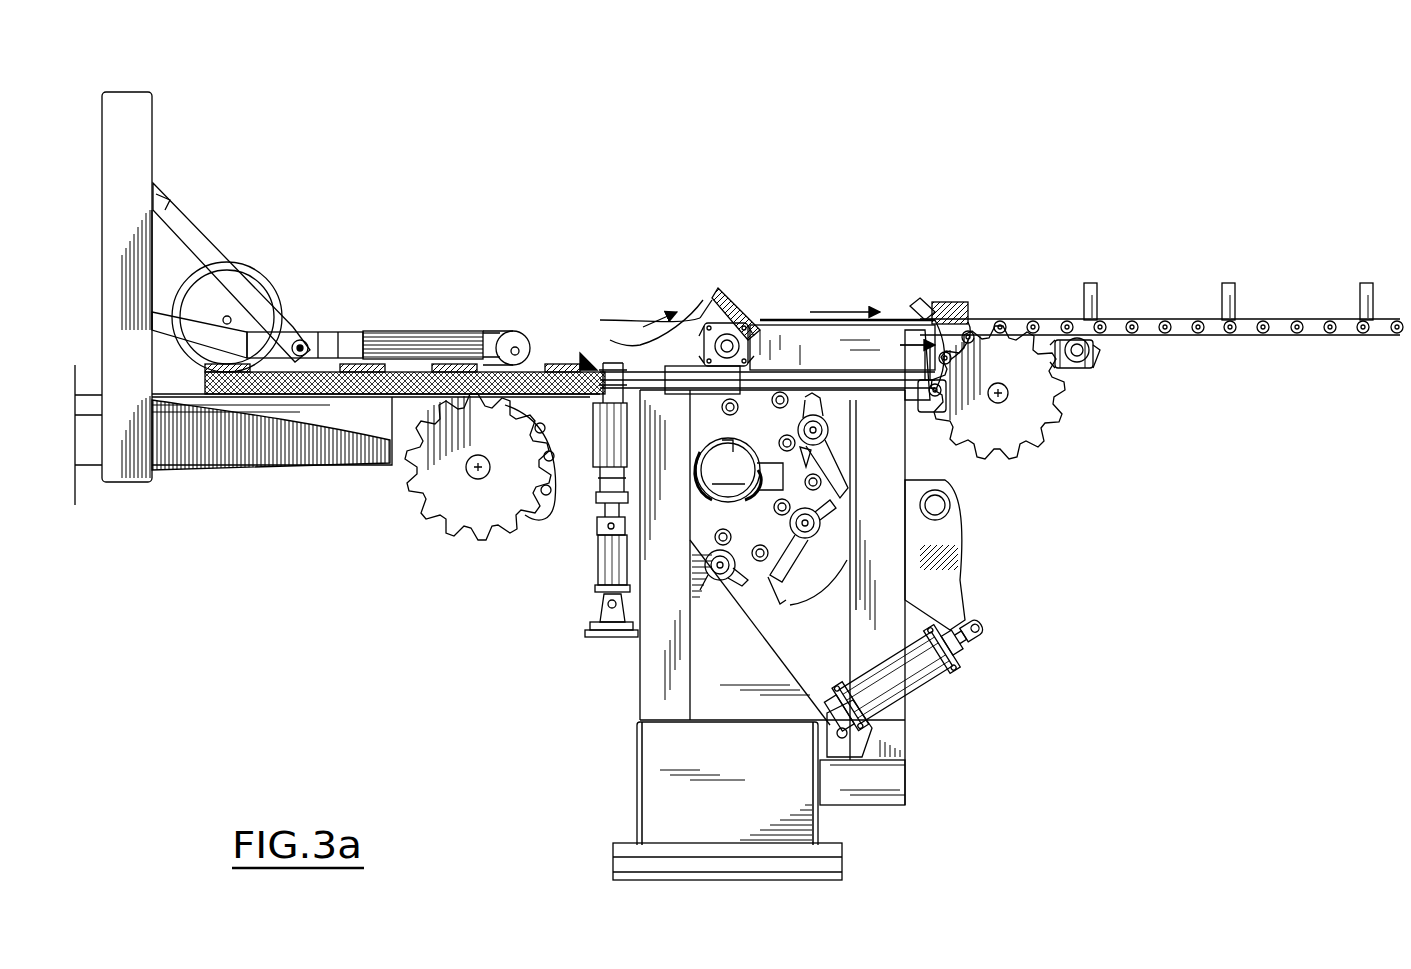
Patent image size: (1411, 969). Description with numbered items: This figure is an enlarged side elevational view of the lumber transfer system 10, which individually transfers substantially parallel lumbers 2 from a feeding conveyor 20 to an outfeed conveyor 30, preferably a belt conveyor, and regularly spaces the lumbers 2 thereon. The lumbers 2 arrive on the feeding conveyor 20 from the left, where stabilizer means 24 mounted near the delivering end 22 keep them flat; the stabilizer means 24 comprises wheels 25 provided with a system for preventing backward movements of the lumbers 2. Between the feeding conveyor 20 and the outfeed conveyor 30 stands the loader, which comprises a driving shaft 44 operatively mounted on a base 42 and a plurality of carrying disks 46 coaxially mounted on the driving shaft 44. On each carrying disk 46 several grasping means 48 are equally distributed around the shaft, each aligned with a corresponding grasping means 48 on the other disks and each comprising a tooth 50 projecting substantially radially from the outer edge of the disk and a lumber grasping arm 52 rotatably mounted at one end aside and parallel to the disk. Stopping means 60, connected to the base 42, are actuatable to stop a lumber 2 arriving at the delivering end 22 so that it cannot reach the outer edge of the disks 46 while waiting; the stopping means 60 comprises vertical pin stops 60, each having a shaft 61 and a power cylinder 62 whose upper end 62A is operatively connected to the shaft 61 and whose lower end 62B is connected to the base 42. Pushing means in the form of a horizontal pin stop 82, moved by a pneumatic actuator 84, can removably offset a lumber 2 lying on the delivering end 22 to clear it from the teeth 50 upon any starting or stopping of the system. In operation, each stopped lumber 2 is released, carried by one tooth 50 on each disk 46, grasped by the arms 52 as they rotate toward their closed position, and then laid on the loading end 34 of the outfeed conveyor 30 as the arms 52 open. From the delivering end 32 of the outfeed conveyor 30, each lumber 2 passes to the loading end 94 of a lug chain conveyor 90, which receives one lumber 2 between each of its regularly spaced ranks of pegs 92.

The lumber transfer system 10 is at (728, 150).
The lumbers 2 is at (300, 395).
The feeding conveyor 20 is at (258, 557).
The delivering end of the feeding conveyor 22 is at (550, 342).
The stabilizer means 24 is at (405, 330).
The wheels 25 is at (262, 290).
The outfeed conveyor 30 is at (840, 305).
The delivering end of the outfeed conveyor 32 is at (780, 312).
The loading end of the outfeed conveyor 34 is at (1073, 323).
The base 42 is at (703, 300).
The driving shaft 44 is at (771, 498).
The carrying disks 46 is at (653, 362).
The grasping means 48 is at (768, 290).
The tooth 50 is at (720, 290).
The lumber grasping arm 52 is at (768, 292).
The stopping means, vertical pins 60 is at (588, 365).
The shaft 61 is at (590, 482).
The power cylinder 62 is at (592, 572).
The upper end 62A is at (597, 537).
The lower end 62B is at (596, 585).
The horizontal pin 82 is at (898, 335).
The pneumatic actuator 84 is at (905, 725).
The lug chain conveyor 90 is at (1170, 235).
The ranks of pegs 92 is at (1366, 282).
The loading end of the lug chain conveyor 94 is at (1005, 335).